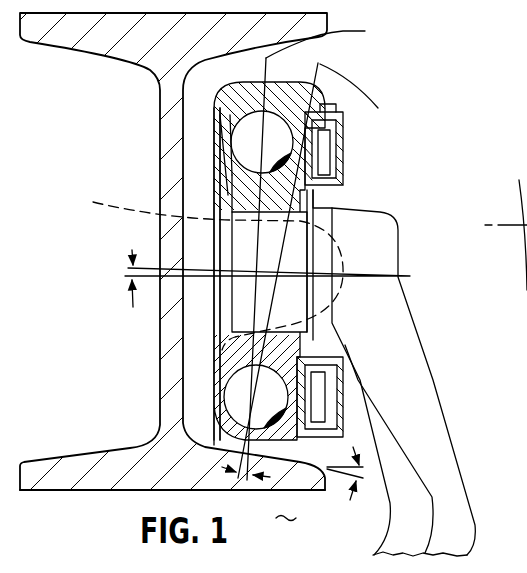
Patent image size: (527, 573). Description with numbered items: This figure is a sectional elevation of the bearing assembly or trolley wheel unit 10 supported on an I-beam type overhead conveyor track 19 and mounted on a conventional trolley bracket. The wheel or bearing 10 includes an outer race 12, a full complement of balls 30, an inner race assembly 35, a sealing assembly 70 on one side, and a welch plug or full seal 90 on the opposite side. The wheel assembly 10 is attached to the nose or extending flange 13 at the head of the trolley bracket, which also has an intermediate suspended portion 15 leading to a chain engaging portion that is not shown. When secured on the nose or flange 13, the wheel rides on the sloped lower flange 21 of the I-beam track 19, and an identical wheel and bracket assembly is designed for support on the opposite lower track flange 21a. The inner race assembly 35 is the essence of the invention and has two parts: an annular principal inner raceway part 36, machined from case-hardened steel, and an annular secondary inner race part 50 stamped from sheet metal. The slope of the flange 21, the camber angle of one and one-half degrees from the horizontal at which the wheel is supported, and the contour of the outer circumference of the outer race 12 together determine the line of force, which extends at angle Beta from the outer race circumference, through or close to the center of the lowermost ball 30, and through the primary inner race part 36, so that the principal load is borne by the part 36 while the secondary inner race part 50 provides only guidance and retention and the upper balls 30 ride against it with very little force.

The bearing assembly or trolley wheel unit 10 is at (394, 66).
The outer race 12 is at (216, 91).
The nose or extending flange 13 is at (207, 269).
The intermediate suspended portion 15 is at (450, 463).
The I-beam overhead conveyor track 19 is at (86, 495).
The sloped lower flange 21 is at (313, 470).
The opposite lower track flange 21a is at (80, 452).
The balls 30 is at (247, 132).
The inner race assembly 35 is at (220, 185).
The primary inner race part 36 is at (290, 348).
The secondary inner race part 50 is at (212, 368).
The sealing assembly 70 is at (352, 153).
The welch plug or full seal 90 is at (211, 340).